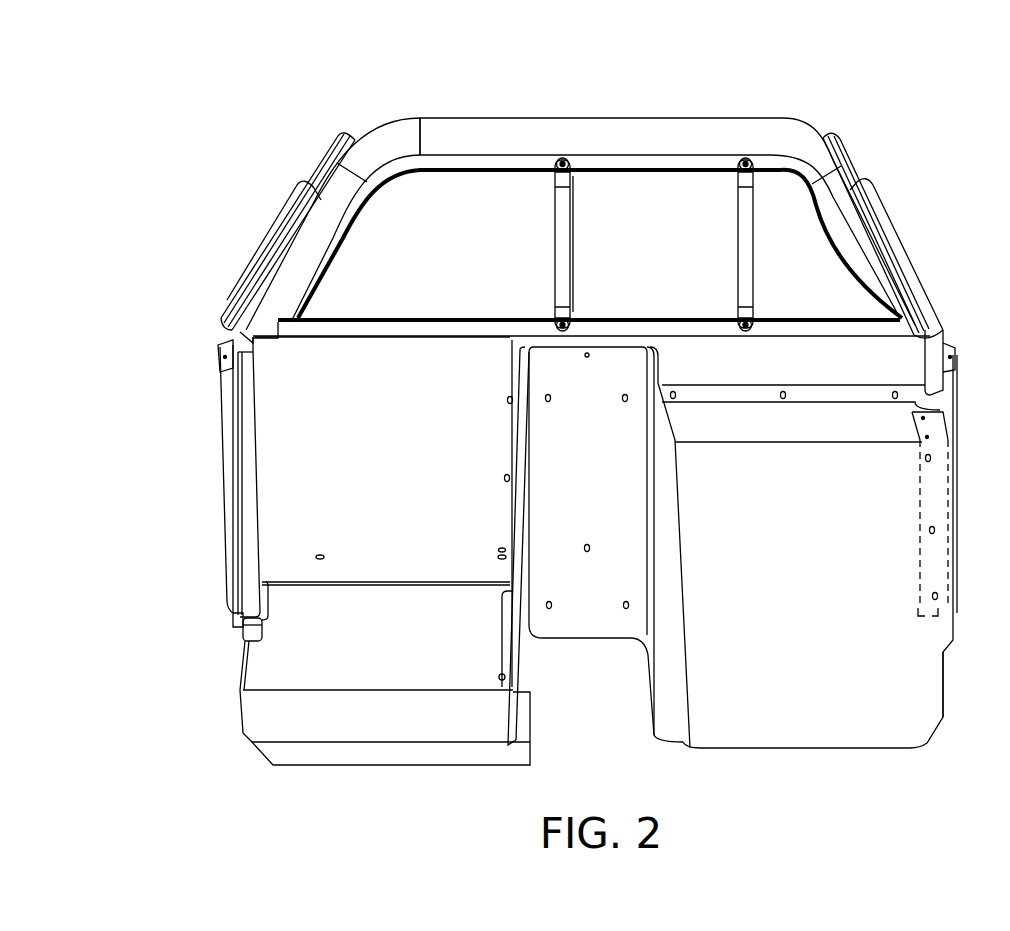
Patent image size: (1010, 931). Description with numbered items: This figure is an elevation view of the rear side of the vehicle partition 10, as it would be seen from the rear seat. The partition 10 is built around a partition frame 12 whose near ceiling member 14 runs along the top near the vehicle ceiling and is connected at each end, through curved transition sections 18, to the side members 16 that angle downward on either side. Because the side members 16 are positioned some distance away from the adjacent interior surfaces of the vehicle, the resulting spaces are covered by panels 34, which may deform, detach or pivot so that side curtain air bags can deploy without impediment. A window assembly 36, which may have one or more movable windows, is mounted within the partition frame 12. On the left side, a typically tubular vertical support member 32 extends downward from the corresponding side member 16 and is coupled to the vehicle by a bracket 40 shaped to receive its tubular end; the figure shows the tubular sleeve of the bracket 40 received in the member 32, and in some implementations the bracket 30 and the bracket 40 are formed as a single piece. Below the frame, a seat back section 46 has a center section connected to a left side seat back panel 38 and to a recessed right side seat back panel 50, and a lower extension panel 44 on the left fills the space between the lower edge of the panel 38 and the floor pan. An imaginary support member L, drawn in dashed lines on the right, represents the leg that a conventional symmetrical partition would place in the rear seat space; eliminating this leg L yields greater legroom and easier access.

The partition 10 is at (887, 122).
The partition frame 12 is at (590, 117).
The near ceiling member 14 is at (503, 118).
The side member 16 is at (262, 308).
The transition section 18 is at (393, 118).
The bracket 30 is at (222, 490).
The vertical support member 32 is at (262, 494).
The panel 34 is at (273, 228).
The window assembly 36 is at (648, 155).
The left side seat back panel 38 is at (414, 590).
The bracket 40 is at (262, 638).
The lower extension panel 44 is at (368, 766).
The seat back section 46 is at (943, 693).
The recessed right side seat back panel 50 is at (787, 611).
The imaginary support member L is at (960, 545).